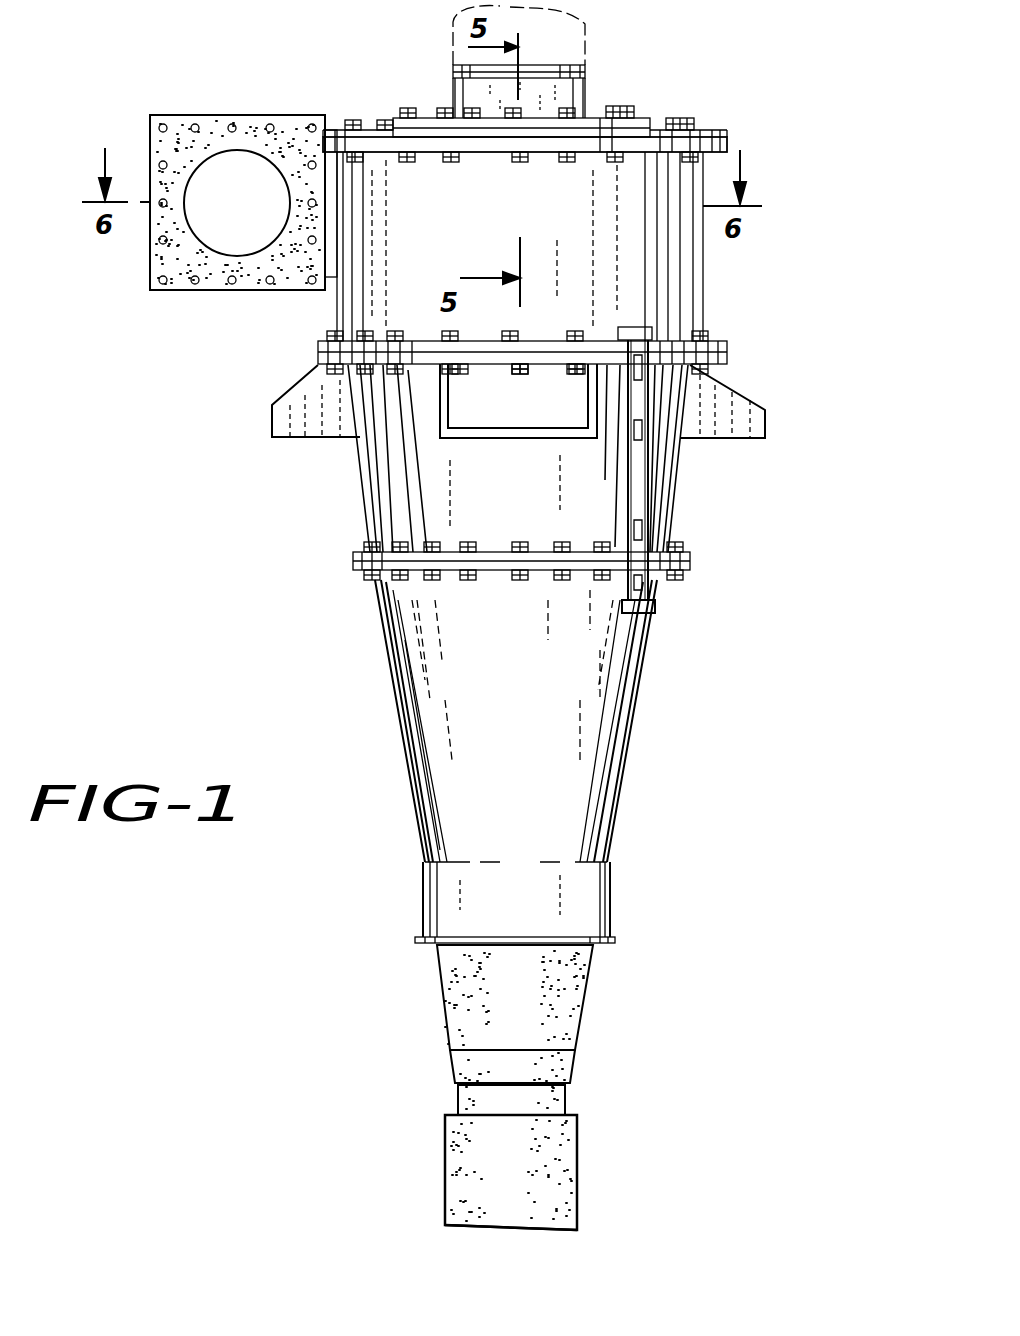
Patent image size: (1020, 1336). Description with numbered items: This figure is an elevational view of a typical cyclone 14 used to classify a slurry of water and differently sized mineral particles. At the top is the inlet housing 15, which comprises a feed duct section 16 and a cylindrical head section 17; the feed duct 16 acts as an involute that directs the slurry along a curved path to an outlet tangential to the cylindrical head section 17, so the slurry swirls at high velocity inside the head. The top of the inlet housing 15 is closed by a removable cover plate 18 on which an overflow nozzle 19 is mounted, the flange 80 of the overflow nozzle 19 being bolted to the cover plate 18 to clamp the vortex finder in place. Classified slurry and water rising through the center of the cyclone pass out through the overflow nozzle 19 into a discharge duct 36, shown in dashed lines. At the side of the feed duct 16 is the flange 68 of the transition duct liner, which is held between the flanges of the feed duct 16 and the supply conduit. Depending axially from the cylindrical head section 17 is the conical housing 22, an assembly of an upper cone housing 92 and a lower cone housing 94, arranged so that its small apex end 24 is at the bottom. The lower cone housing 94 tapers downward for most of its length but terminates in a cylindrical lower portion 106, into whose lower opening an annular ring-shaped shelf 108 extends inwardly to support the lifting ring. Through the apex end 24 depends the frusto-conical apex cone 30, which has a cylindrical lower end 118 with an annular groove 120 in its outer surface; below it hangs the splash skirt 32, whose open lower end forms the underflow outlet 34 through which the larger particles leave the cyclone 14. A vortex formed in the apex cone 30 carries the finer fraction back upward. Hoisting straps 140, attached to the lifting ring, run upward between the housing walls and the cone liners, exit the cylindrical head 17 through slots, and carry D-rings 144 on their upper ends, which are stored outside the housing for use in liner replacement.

The cyclone 14 is at (330, 572).
The inlet housing 15 is at (735, 285).
The feed duct section 16 is at (325, 290).
The cylindrical head section 17 is at (685, 324).
The cover plate 18 is at (727, 137).
The overflow nozzle 19 is at (453, 97).
The conical housing 22 is at (376, 636).
The apex end 24 is at (612, 919).
The apex cone 30 is at (595, 1006).
The splash skirt 32 is at (432, 1157).
The underflow outlet 34 is at (477, 1230).
The discharge duct 36 is at (585, 58).
The flange 68 is at (160, 258).
The flange of the overflow nozzle 80 is at (645, 122).
The upper cone housing 92 is at (400, 484).
The lower cone housing 94 is at (433, 700).
The cylindrical lower portion 106 is at (590, 880).
The annular ring-shaped shelf 108 is at (425, 945).
The cylindrical lower end 118 is at (455, 1068).
The annular groove 120 is at (570, 1097).
The hoisting straps 140 is at (650, 492).
The D-rings 144 is at (655, 613).